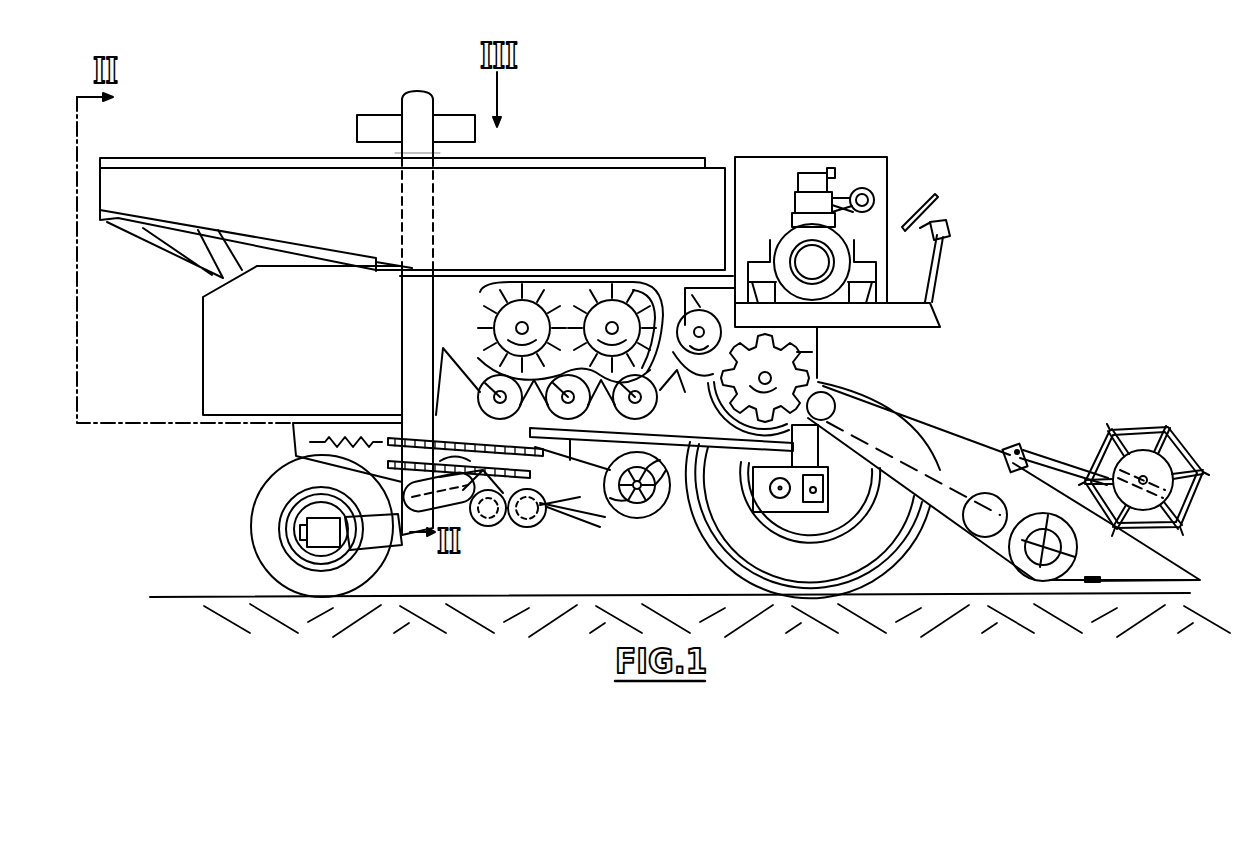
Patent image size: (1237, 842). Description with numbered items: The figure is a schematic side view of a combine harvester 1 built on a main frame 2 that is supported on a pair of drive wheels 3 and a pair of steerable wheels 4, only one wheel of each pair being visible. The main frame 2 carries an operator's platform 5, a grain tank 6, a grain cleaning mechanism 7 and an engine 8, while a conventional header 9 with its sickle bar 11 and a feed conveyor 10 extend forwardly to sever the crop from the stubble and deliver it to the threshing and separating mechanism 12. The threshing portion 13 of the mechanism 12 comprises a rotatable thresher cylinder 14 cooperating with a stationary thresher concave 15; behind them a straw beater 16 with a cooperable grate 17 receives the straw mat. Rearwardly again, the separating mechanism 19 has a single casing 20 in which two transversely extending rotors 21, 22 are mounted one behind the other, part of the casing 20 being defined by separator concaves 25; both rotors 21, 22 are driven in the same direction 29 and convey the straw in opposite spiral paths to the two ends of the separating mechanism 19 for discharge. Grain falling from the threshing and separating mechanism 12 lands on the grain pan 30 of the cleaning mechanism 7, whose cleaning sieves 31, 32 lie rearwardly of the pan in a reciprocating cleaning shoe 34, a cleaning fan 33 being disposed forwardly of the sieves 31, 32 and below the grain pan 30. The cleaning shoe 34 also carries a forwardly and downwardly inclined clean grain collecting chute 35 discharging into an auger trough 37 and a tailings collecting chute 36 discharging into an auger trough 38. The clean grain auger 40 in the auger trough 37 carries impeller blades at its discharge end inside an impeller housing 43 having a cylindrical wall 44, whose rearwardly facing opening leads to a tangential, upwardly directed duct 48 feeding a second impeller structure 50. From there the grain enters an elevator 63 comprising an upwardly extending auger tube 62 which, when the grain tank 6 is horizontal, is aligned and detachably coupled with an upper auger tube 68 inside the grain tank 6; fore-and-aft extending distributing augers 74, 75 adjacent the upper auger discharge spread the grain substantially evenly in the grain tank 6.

The combine harvester 1 is at (641, 141).
The main frame 2 is at (686, 480).
The drive wheels 3 is at (713, 555).
The steerable wheels 4 is at (390, 556).
The operator's platform 5 is at (913, 325).
The grain tank 6 is at (542, 155).
The grain cleaning mechanism 7 is at (268, 462).
The engine 8 is at (818, 173).
The header 9 is at (1012, 574).
The feed conveyor 10 is at (963, 438).
The sickle bar 11 is at (1100, 513).
The threshing and separating mechanism 12 is at (636, 257).
The threshing portion 13 is at (837, 363).
The thresher cylinder 14 is at (797, 352).
The thresher concave 15 is at (740, 405).
The straw beater 16 is at (707, 293).
The grate 17 is at (693, 373).
The separating mechanism 19 is at (565, 257).
The casing 20 is at (582, 285).
The separating rotor 21 is at (640, 297).
The separating rotor 22 is at (517, 293).
The separator concaves 25 is at (552, 403).
The direction of rotation 29 is at (486, 384).
The grain pan 30 is at (767, 443).
The cleaning sieve 31 is at (533, 445).
The cleaning sieve 32 is at (548, 478).
The cleaning fan 33 is at (643, 500).
The cleaning shoe 34 is at (265, 433).
The clean grain collecting chute 35 is at (560, 508).
The tailings collecting chute 36 is at (290, 462).
The auger trough 37 is at (538, 518).
The auger trough 38 is at (480, 527).
The clean grain auger 40 is at (548, 530).
The impeller housing 43 is at (523, 527).
The cylindrical wall 44 is at (533, 535).
The duct 48 is at (483, 526).
The second impeller structure 50 is at (463, 540).
The auger tube 62 is at (402, 345).
The elevator 63 is at (390, 298).
The auger tube 68 is at (402, 153).
The distributing auger 74 is at (373, 115).
The distributing auger 75 is at (460, 115).